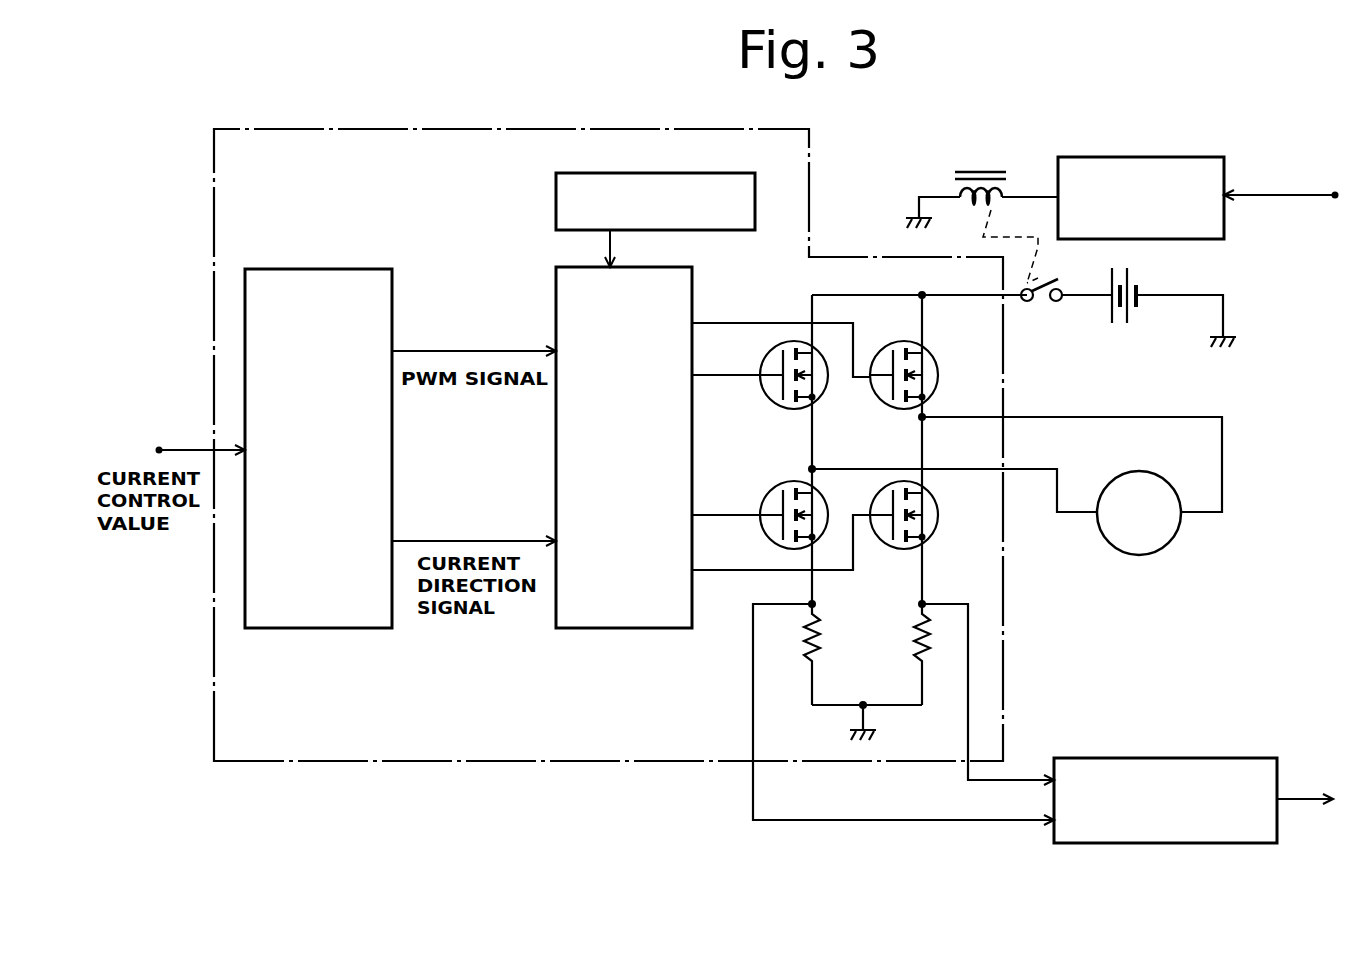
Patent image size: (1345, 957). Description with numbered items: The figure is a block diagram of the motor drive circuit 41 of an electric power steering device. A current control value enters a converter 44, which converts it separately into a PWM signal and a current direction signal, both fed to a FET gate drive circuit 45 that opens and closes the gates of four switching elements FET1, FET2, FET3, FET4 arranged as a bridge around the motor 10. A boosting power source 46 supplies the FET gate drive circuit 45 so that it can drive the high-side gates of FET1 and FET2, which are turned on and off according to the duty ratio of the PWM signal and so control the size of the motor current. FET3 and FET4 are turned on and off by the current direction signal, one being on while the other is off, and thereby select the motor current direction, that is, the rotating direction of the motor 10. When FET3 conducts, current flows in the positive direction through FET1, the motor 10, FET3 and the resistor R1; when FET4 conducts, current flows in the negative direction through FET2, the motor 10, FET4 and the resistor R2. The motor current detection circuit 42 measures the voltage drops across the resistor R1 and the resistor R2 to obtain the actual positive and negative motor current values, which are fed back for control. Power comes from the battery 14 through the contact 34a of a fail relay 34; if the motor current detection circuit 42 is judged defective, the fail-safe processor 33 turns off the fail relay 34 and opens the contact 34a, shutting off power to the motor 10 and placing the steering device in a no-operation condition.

The motor 10 is at (1170, 478).
The battery 14 is at (1140, 311).
The fail-safe processor 33 is at (1226, 164).
The fail relay 34 is at (996, 171).
The contact 34a is at (1045, 311).
The motor drive circuit 41 is at (333, 762).
The motor current detection circuit 42 is at (1099, 758).
The converter 44 is at (324, 269).
The FET gate drive circuit 45 is at (703, 281).
The boosting power source 46 is at (554, 194).
The switching element FET1 is at (879, 402).
The switching element FET2 is at (769, 402).
The switching element FET3 is at (767, 489).
The switching element FET4 is at (890, 548).
The resistor R1 is at (795, 642).
The resistor R2 is at (903, 642).